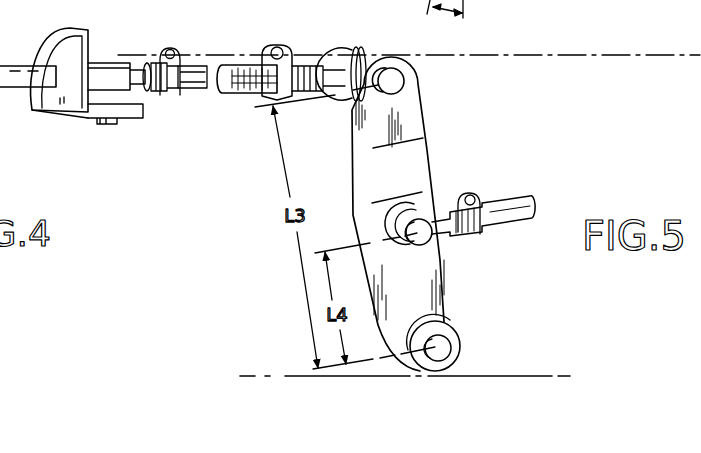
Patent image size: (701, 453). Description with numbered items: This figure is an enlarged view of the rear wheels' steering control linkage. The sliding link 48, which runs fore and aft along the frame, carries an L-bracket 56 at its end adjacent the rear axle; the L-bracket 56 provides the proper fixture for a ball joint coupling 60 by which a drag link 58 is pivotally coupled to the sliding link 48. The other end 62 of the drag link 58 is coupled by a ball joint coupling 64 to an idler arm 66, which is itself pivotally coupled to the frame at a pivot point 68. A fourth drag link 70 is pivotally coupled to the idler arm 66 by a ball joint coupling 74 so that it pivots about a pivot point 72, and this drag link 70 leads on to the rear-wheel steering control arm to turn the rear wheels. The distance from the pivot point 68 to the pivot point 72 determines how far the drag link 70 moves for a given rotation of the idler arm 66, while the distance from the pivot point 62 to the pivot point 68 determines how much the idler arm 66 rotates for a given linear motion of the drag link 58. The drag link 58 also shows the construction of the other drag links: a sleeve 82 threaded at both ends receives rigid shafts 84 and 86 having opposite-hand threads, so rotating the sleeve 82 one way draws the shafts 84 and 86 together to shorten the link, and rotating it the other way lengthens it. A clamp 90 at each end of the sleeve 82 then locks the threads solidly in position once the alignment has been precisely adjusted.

The sliding link 48 is at (43, 87).
The L-bracket 56 is at (133, 118).
The drag link 58 is at (261, 52).
The ball joint coupling 60 is at (103, 70).
The other end of the drag link 62 is at (396, 81).
The ball joint coupling 64 is at (357, 57).
The idler arm 66 is at (408, 122).
The pivot point 68 is at (438, 347).
The fourth drag link 70 is at (516, 222).
The pivot point 72 is at (423, 246).
The ball joint coupling 74 is at (422, 213).
The sleeve 82 is at (222, 94).
The rigid shaft 84 is at (147, 66).
The rigid shaft 86 is at (320, 70).
The clamp 90 is at (183, 63).